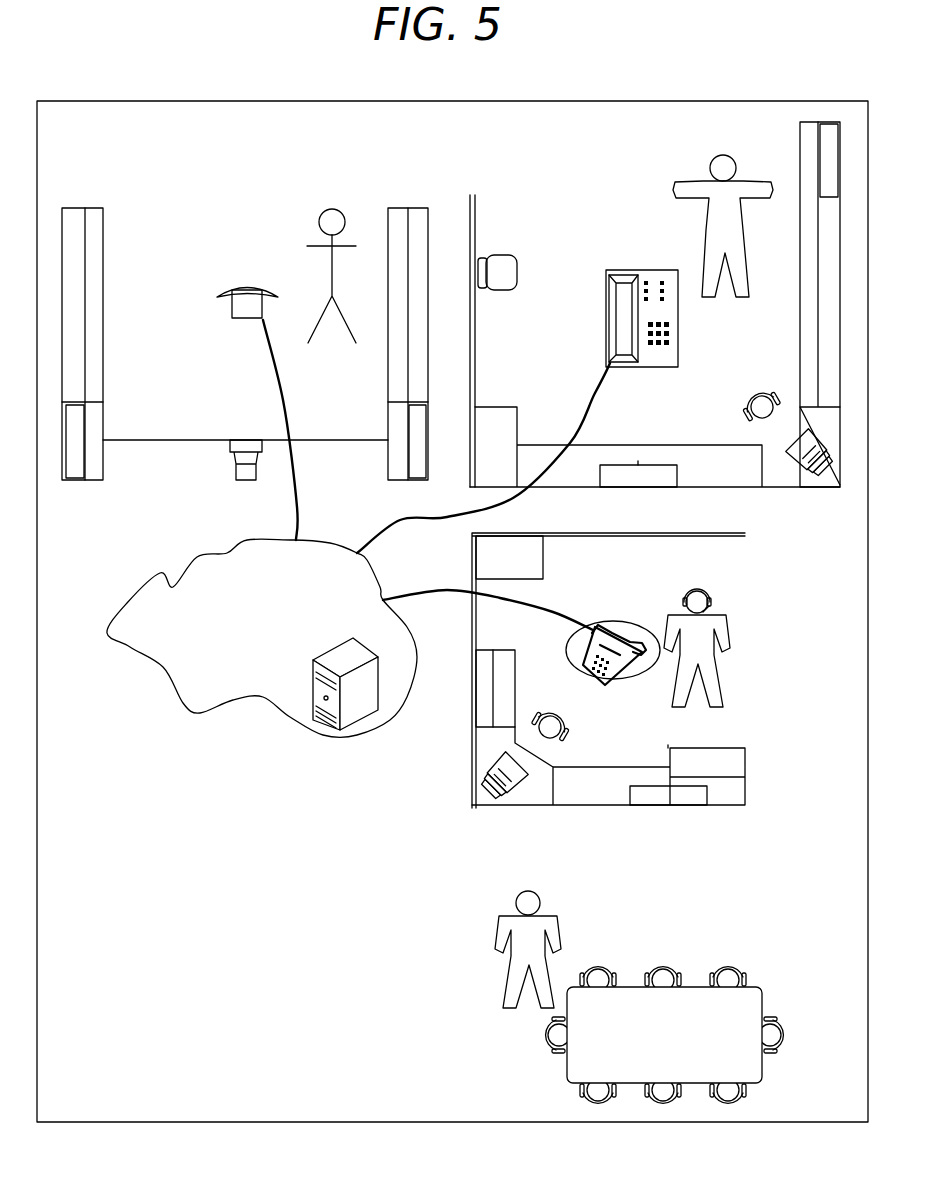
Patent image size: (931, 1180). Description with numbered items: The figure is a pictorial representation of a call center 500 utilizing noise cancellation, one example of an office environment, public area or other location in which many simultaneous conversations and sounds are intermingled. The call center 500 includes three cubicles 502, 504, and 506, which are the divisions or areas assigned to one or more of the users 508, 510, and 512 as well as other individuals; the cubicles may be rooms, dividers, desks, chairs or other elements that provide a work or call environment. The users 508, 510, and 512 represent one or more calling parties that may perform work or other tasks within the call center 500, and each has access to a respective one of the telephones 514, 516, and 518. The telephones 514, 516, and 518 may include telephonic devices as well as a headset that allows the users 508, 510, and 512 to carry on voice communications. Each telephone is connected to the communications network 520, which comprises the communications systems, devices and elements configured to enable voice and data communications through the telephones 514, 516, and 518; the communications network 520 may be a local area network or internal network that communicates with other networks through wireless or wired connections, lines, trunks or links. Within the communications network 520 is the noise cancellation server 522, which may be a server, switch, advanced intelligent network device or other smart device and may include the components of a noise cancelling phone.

The call center 500 is at (98, 101).
The cubicle 502 is at (172, 237).
The cubicle 504 is at (522, 219).
The cubicle 506 is at (745, 567).
The user 508 is at (347, 327).
The user 510 is at (735, 270).
The user 512 is at (717, 670).
The telephone 514 is at (245, 310).
The telephone 516 is at (617, 337).
The telephone 518 is at (624, 668).
The communications network 520 is at (283, 667).
The noise cancellation server 522 is at (345, 708).